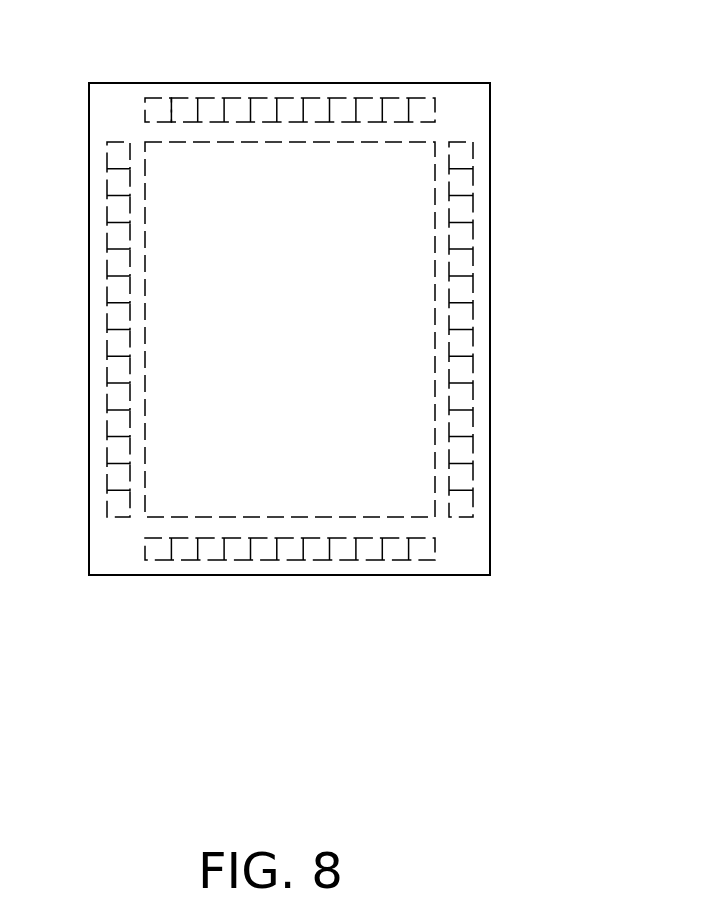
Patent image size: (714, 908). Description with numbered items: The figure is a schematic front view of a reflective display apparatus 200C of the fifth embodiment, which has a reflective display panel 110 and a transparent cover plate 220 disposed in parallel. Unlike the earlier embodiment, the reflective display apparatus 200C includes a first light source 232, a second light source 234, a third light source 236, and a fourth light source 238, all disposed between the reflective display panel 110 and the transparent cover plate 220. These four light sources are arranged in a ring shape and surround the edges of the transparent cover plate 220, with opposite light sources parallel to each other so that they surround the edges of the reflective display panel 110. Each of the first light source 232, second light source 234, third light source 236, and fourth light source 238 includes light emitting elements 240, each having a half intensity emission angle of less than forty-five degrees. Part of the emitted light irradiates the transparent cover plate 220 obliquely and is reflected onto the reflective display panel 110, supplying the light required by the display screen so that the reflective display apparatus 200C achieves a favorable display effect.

The reflective display panel 110 is at (417, 418).
The transparent cover plate 220 is at (295, 321).
The first light source 232 is at (298, 68).
The second light source 234 is at (363, 562).
The third light source 236 is at (108, 268).
The fourth light source 238 is at (473, 303).
The light emitting element 240 is at (158, 98).
The reflective display apparatus 200C is at (668, 630).